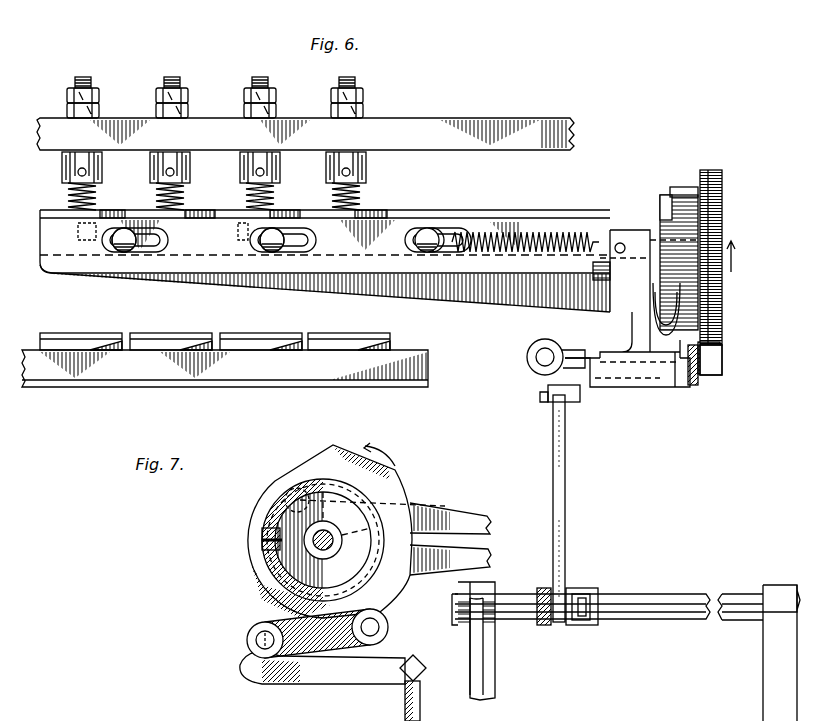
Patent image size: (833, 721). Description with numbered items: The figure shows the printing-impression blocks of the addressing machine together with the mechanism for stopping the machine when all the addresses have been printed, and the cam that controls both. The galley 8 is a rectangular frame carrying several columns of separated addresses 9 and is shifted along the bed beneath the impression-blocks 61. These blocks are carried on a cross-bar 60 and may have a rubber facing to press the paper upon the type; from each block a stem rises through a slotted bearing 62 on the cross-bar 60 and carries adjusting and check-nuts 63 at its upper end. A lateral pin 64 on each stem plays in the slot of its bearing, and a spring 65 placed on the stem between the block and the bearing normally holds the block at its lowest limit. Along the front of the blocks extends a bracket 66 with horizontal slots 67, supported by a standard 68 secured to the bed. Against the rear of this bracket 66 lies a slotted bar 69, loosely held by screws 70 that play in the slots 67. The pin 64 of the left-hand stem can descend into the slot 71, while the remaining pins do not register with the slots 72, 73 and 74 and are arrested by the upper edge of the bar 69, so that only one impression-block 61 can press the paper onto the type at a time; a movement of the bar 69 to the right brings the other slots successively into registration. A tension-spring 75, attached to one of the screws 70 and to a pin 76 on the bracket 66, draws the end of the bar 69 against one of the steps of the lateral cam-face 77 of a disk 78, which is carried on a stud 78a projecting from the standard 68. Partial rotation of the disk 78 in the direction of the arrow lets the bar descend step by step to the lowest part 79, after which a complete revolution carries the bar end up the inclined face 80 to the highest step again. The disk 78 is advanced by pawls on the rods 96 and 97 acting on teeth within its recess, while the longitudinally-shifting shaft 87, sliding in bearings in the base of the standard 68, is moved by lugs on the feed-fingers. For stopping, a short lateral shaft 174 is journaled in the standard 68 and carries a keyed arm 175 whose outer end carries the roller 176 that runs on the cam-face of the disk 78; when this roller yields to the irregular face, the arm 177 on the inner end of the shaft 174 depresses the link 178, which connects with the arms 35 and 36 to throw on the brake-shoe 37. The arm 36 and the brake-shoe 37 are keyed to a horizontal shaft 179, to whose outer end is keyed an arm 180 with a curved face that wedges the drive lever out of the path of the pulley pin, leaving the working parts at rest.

In FIG. 6, the galley 8 is at (426, 372).
In FIG. 6, the addresses 9 is at (72, 336).
In FIG. 6, the arm 35 is at (543, 626).
In FIG. 6, the arm 36 is at (578, 626).
In FIG. 6, the brake-shoe 37 is at (486, 641).
In FIG. 6, the cross-bar 60 is at (438, 120).
In FIG. 6, the impression-blocks 61 is at (44, 210).
In FIG. 6, the slotted bearings 62 is at (62, 168).
In FIG. 6, the adjusting and check-nuts 63 is at (331, 100).
In FIG. 6, the lateral pins 64 is at (170, 172).
In FIG. 6, the springs 65 is at (96, 198).
In FIG. 6, the bracket 66 is at (92, 276).
In FIG. 6, the horizontal slots 67 is at (150, 252).
In FIG. 6, the standard 68 is at (632, 334).
In FIG. 6, the slotted bar 69 is at (433, 225).
In FIG. 7, the slotted bar 69 is at (262, 535).
In FIG. 6, the screws 70 is at (122, 252).
In FIG. 6, the slot 71 is at (86, 224).
In FIG. 6, the slot 72 is at (160, 218).
In FIG. 6, the slot 73 is at (240, 218).
In FIG. 6, the slot 74 is at (325, 218).
In FIG. 6, the tension-spring 75 is at (540, 234).
In FIG. 6, the pin 76 is at (620, 243).
In FIG. 6, the lateral cam-face 77 is at (682, 198).
In FIG. 7, the lateral cam-face 77 is at (296, 488).
In FIG. 6, the disk 78 is at (722, 208).
In FIG. 7, the disk 78 is at (372, 460).
In FIG. 6, the stud 78a is at (607, 312).
In FIG. 7, the stud 78a is at (330, 555).
In FIG. 6, the lowest part 79 is at (700, 241).
In FIG. 7, the lowest part 79 is at (392, 508).
In FIG. 6, the inclined face 80 is at (674, 320).
In FIG. 7, the inclined face 80 is at (266, 566).
In FIG. 6, the longitudinally-shifting shaft 87 is at (535, 357).
In FIG. 7, the rod 96 is at (476, 513).
In FIG. 7, the rod 97 is at (491, 556).
In FIG. 6, the short lateral shaft 174 is at (660, 388).
In FIG. 7, the short lateral shaft 174 is at (248, 640).
In FIG. 6, the arm 175 is at (692, 386).
In FIG. 7, the arm 175 is at (317, 633).
In FIG. 6, the pin 176 is at (720, 363).
In FIG. 7, the pin 176 is at (389, 620).
In FIG. 7, the arm 177 is at (343, 684).
In FIG. 6, the link 178 is at (565, 470).
In FIG. 7, the link 178 is at (421, 713).
In FIG. 6, the horizontal shaft 179 is at (650, 594).
In FIG. 6, the arm 180 is at (778, 720).